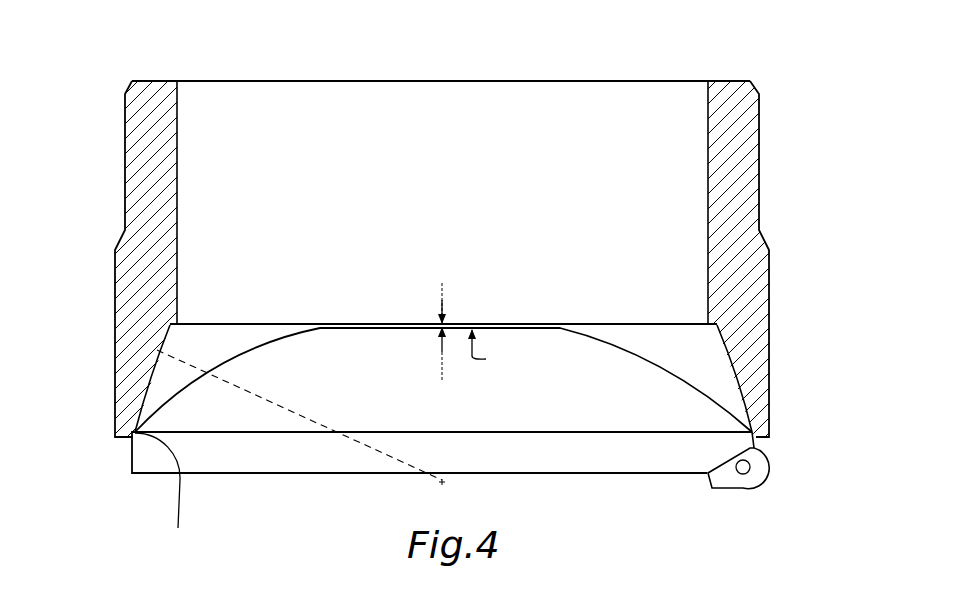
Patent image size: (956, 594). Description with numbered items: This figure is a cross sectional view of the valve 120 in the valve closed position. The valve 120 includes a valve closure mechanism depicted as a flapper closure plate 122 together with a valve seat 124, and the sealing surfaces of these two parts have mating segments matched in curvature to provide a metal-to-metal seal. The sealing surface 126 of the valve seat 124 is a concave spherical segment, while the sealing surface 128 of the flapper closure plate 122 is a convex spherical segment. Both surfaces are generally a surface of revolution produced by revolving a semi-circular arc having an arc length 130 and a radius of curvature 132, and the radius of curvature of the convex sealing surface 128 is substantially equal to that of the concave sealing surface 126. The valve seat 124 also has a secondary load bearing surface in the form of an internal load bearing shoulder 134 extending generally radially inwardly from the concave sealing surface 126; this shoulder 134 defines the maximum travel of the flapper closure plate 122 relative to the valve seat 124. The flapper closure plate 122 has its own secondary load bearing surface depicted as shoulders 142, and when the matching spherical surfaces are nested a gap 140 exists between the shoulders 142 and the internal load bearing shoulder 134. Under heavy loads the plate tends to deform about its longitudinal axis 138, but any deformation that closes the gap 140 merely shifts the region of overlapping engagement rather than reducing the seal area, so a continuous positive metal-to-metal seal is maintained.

The valve 120 is at (573, 60).
The flapper closure plate 122 is at (615, 463).
The valve seat 124 is at (150, 97).
The sealing surface of valve seat 126 is at (157, 349).
The sealing surface of flapper closure plate 128 is at (166, 495).
The arc length 130 is at (745, 364).
The radius of curvature 132 is at (282, 403).
The internal load bearing shoulder 134 is at (176, 315).
The longitudinal axis 138 is at (741, 490).
The gap 140 is at (443, 307).
The shoulders 142 is at (496, 353).